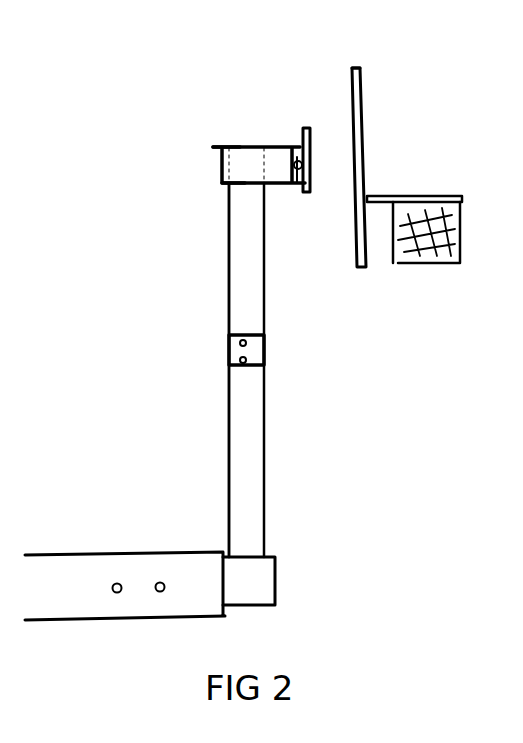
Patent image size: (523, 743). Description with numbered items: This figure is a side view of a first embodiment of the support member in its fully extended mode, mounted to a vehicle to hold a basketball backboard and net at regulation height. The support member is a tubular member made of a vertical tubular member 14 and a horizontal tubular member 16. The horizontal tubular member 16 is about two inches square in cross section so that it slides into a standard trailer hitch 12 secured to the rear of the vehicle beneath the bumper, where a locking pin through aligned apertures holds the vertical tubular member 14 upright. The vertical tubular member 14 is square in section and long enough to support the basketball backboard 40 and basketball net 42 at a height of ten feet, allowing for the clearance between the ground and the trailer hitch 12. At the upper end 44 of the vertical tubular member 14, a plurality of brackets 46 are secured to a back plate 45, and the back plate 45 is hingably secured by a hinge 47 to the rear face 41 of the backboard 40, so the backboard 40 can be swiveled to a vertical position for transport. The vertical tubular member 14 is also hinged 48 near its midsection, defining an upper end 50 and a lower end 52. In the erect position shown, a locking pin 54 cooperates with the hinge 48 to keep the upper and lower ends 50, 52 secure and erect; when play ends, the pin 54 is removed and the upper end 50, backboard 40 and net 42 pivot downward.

The trailer hitch 12 is at (93, 607).
The vertical tubular member 14 is at (227, 477).
The horizontal tubular member 16 is at (263, 588).
The basketball backboard 40 is at (362, 103).
The rear face of backboard 41 is at (352, 90).
The basketball net 42 is at (413, 200).
The upper end of vertical tubular member 44 is at (247, 145).
The back plate 45 is at (308, 117).
The brackets 46 is at (218, 148).
The hinge 47 is at (290, 186).
The hinge 48 is at (230, 357).
The upper end of vertical tubular member 50 is at (220, 268).
The lower end of vertical tubular member 52 is at (222, 417).
The locking pin 54 is at (227, 370).